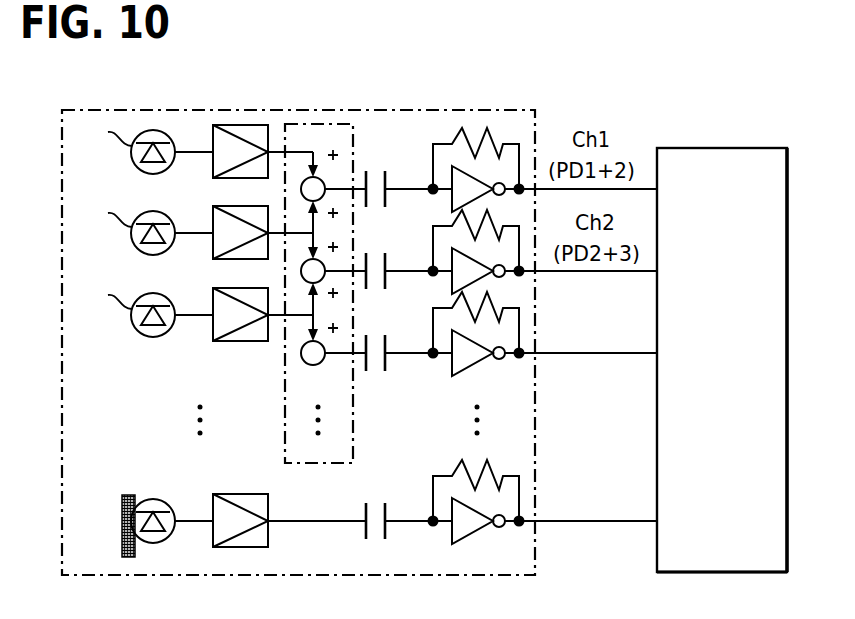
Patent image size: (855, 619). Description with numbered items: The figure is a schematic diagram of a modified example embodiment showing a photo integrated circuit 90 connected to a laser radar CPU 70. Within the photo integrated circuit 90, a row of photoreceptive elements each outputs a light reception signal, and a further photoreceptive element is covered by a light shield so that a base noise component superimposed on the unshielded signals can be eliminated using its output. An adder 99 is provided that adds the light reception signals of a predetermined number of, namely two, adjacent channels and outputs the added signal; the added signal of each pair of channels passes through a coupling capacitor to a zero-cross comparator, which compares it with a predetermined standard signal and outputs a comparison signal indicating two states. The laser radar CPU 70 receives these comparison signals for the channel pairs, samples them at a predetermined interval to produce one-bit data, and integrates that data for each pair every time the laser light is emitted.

The photo integrated circuit 90 is at (250, 108).
The adder 99 is at (318, 124).
The laser radar CPU 70 is at (722, 148).